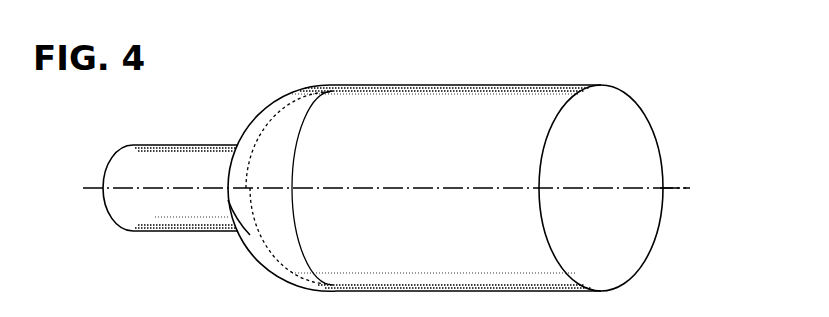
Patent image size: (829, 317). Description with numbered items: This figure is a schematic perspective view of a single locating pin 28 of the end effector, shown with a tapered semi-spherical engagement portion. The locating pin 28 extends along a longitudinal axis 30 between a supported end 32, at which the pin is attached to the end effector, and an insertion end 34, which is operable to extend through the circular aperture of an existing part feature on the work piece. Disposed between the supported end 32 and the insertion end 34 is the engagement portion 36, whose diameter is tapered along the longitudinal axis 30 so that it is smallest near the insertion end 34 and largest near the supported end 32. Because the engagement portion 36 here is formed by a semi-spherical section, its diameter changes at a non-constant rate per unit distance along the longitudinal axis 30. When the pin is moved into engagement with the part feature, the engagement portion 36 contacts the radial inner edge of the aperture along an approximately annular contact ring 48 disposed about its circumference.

The locating pin 28 is at (597, 61).
The longitudinal axis 30 is at (672, 188).
The supported end 32 is at (627, 255).
The insertion end 34 is at (108, 210).
The engagement portion 36 is at (300, 90).
The annular contact ring 48 is at (240, 233).